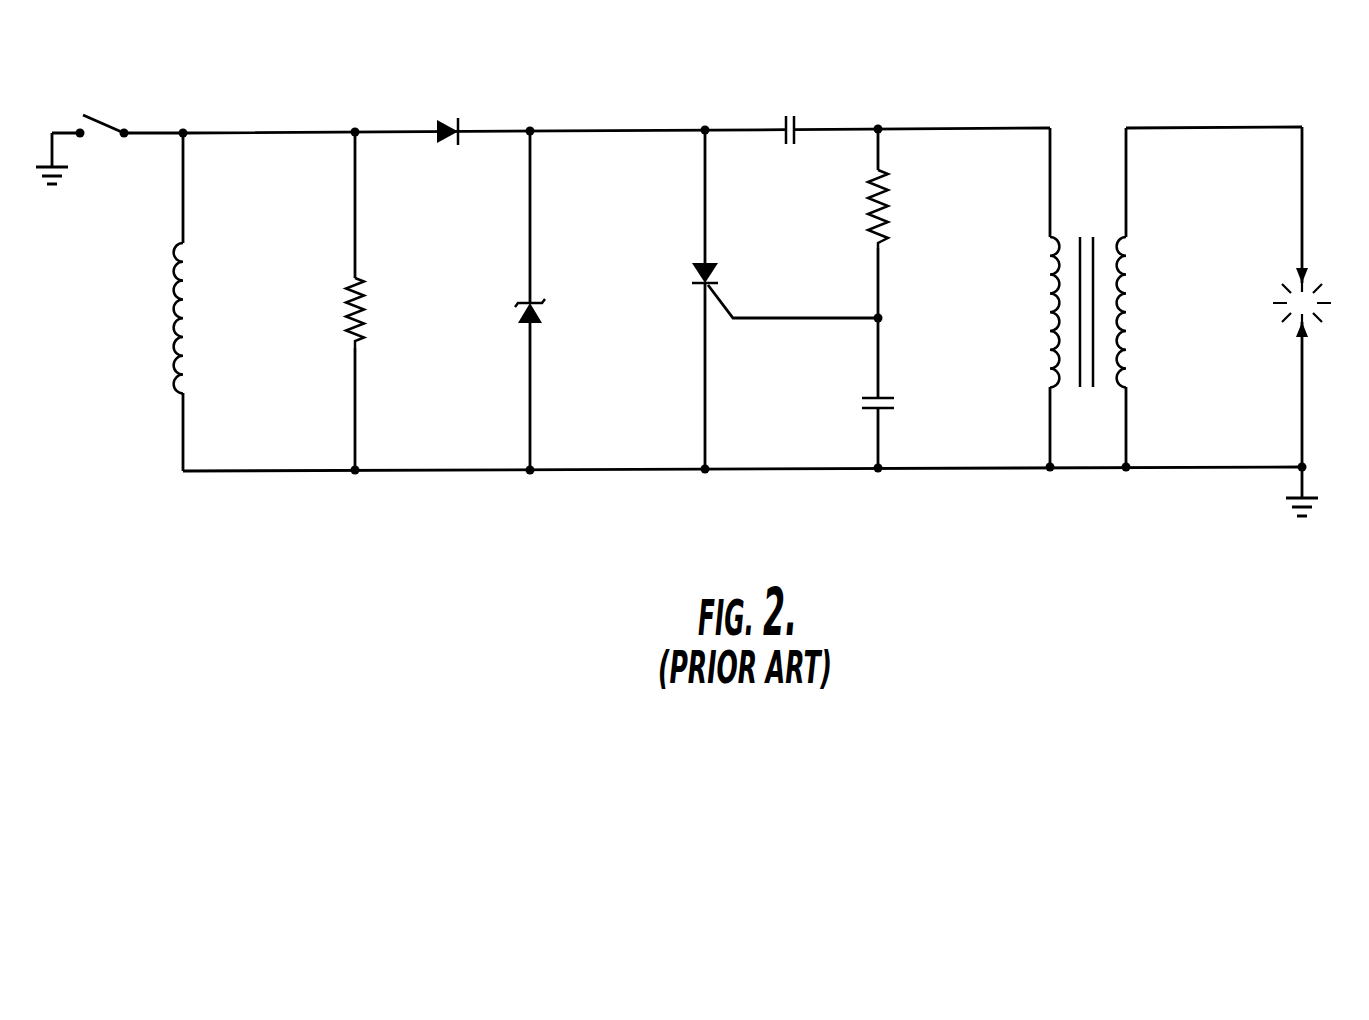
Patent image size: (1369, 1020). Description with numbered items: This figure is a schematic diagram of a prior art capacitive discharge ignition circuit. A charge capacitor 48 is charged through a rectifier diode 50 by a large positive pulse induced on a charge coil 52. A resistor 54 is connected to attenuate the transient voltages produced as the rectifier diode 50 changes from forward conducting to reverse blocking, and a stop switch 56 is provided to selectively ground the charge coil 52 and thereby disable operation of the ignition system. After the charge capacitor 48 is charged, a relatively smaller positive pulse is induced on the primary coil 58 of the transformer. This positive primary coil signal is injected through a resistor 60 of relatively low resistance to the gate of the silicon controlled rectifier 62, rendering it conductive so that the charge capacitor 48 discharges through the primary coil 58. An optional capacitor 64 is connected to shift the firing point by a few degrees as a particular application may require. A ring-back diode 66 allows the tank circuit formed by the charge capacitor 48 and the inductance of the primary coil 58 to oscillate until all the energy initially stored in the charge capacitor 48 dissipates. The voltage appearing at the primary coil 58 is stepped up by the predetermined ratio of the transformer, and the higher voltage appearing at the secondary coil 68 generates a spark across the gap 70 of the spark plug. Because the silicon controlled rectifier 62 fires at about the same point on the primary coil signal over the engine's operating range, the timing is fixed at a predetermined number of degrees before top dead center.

The charge capacitor 48 is at (782, 120).
The rectifier diode 50 is at (437, 118).
The charge coil 52 is at (177, 316).
The resistor 54 is at (346, 319).
The stop switch 56 is at (98, 120).
The primary coil 58 is at (1043, 307).
The resistor 60 is at (887, 190).
The silicon controlled rectifier 62 is at (693, 272).
The capacitor 64 is at (893, 397).
The ring-back diode 66 is at (525, 327).
The secondary coil 68 is at (1118, 284).
The gap 70 is at (1308, 307).